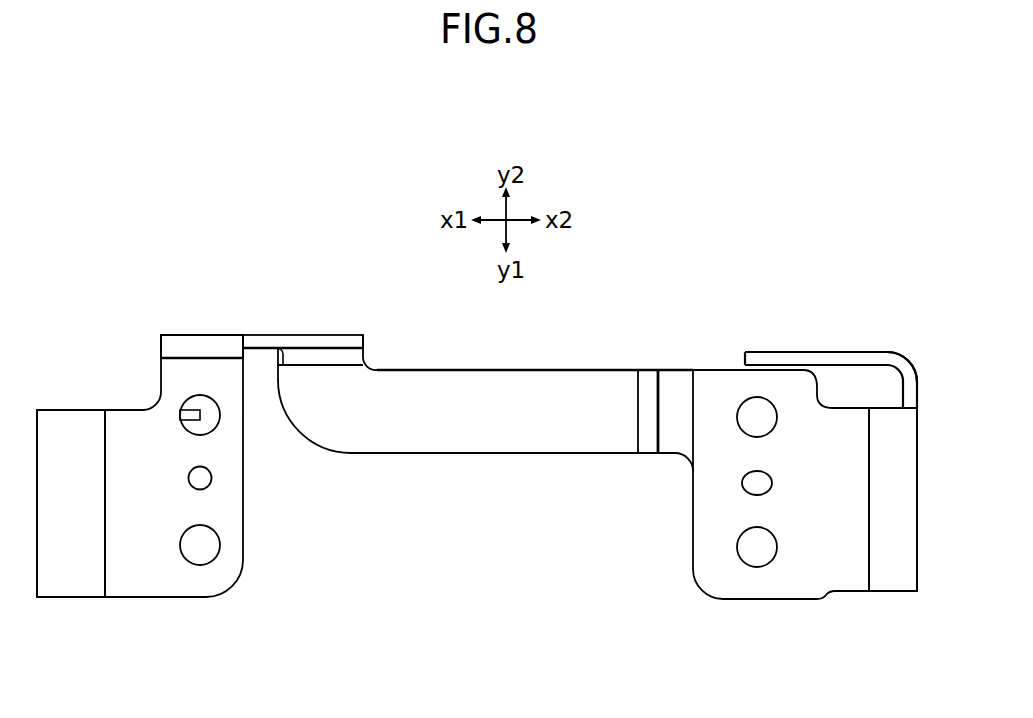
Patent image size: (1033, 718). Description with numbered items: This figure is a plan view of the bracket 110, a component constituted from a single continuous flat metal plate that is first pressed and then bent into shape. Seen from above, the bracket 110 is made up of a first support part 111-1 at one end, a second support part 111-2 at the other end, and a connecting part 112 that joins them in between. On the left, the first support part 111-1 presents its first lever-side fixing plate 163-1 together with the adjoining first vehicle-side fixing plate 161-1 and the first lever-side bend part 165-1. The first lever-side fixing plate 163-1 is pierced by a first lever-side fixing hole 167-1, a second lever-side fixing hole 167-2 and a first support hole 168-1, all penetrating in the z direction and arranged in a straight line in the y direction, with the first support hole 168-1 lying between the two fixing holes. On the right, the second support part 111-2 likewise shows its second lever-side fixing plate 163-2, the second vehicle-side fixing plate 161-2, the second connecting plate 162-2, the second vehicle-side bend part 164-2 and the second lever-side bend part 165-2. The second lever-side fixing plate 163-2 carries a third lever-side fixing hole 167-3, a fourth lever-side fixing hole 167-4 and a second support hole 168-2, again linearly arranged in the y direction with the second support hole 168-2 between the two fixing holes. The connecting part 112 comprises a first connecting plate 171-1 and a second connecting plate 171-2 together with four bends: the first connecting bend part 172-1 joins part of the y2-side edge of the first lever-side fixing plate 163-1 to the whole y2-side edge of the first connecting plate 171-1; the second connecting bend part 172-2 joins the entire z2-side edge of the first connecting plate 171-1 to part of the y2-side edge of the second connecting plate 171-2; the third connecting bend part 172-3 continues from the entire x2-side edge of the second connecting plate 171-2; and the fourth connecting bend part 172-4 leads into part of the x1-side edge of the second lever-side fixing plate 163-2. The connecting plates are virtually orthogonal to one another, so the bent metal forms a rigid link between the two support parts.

The bracket 110 is at (285, 233).
The first support part 111-1 is at (235, 513).
The second support part 111-2 is at (702, 537).
The connecting part 112 is at (478, 422).
The first vehicle-side fixing plate 161-1 is at (182, 410).
The second vehicle-side fixing plate 161-2 is at (797, 362).
The second connecting plate 162-2 is at (913, 393).
The first lever-side fixing plate 163-1 is at (165, 575).
The second lever-side fixing plate 163-2 is at (820, 573).
The second vehicle-side bend part 164-2 is at (910, 357).
The first lever-side bend part 165-1 is at (72, 578).
The second lever-side bend part 165-2 is at (897, 567).
The first lever-side fixing hole 167-1 is at (205, 546).
The second lever-side fixing hole 167-2 is at (215, 406).
The third lever-side fixing hole 167-3 is at (751, 552).
The fourth lever-side fixing hole 167-4 is at (757, 398).
The first support hole 168-1 is at (206, 470).
The second support hole 168-2 is at (742, 474).
The first connecting plate 171-1 is at (307, 343).
The second connecting plate 171-2 is at (542, 397).
The first connecting bend part 172-1 is at (178, 348).
The second connecting bend part 172-2 is at (360, 358).
The third connecting bend part 172-3 is at (645, 398).
The fourth connecting bend part 172-4 is at (677, 395).